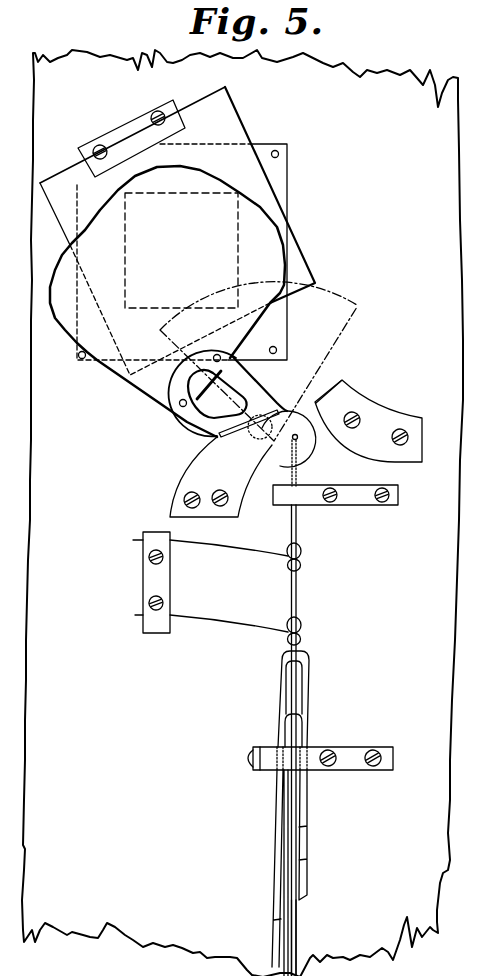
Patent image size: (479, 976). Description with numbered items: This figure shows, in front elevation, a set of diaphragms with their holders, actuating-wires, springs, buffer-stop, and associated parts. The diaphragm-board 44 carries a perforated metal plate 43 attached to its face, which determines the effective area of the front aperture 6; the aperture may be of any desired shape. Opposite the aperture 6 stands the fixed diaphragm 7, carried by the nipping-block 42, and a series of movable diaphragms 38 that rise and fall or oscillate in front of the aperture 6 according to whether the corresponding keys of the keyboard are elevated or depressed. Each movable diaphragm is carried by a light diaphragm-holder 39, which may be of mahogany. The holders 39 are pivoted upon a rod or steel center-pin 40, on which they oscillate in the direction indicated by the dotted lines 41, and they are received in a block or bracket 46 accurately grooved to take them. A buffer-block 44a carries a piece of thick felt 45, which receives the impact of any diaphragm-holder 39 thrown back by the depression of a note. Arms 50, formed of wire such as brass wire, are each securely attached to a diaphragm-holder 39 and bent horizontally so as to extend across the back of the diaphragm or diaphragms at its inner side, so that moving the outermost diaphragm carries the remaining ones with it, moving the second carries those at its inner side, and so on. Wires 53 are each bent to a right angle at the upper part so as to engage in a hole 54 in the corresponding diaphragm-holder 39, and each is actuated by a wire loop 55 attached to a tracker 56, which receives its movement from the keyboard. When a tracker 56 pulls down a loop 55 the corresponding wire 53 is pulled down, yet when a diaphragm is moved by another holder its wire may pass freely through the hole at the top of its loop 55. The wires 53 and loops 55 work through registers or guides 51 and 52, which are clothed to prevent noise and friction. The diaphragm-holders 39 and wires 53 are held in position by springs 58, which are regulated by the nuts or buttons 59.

The front aperture 6 is at (181, 250).
The fixed diaphragm 7 is at (177, 231).
The diaphragm 38 is at (167, 301).
The diaphragm-holder 39 is at (255, 397).
The rod or center 40 is at (279, 439).
The dotted lines 41 is at (258, 361).
The nipping-block 42 is at (131, 138).
The perforated metal plate 43 is at (283, 184).
The diaphragm-board 44 is at (242, 513).
The buffer-block 44a is at (386, 420).
The piece of thick felt 45 is at (339, 386).
The block or bracket 46 is at (221, 477).
The arm 50 is at (220, 439).
The register or guide 51 is at (362, 494).
The register or guide 52 is at (320, 772).
The wire 53 is at (313, 740).
The hole 54 is at (297, 438).
The wire loop 55 is at (308, 690).
The tracker 56 is at (292, 920).
The spring 58 is at (210, 587).
The nut or button 59 is at (302, 563).